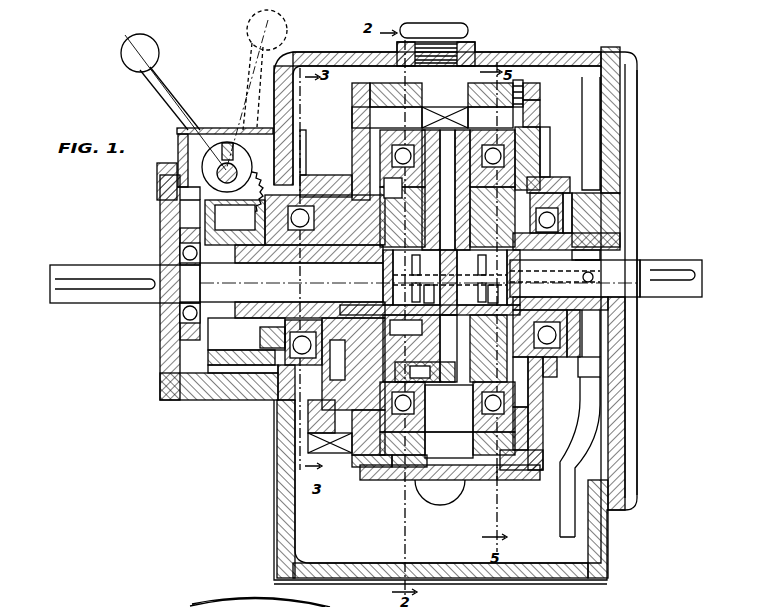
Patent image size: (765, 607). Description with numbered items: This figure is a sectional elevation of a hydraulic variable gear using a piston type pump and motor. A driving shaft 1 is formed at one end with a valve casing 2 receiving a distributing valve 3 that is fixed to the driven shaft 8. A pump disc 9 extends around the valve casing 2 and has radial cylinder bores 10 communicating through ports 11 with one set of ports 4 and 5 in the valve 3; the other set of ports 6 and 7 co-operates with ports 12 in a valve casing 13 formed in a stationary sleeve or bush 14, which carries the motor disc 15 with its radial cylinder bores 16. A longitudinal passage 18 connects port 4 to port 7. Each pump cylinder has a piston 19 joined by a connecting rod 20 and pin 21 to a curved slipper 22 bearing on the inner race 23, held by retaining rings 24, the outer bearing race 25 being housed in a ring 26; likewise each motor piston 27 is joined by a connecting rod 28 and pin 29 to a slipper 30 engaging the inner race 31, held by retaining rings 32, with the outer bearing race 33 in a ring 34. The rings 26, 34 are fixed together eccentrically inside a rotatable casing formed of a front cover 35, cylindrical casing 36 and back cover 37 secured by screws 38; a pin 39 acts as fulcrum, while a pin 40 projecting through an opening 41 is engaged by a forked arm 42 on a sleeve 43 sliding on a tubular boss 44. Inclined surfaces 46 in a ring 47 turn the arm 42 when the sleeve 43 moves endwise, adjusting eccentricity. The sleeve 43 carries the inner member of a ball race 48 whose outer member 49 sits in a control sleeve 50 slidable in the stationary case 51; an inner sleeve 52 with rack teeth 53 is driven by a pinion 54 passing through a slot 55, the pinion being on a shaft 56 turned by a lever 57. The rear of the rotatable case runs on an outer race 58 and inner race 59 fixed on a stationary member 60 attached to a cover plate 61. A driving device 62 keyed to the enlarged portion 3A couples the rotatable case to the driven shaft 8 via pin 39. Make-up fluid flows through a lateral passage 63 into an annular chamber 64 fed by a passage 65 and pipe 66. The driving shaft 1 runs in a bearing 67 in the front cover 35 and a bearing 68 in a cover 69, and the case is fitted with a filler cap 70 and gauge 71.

The driving shaft 1 is at (125, 284).
The valve casing 2 is at (345, 175).
The distributing valve 3 is at (462, 294).
The portion of enlarged diameter 3A is at (468, 222).
The port 4 is at (421, 265).
The port 5 is at (408, 293).
The port 6 is at (488, 265).
The port 7 is at (475, 293).
The driven shaft 8 is at (672, 263).
The pump disc 9 is at (402, 188).
The radial cylinder bores 10 is at (411, 348).
The ports 11 is at (385, 298).
The ports 12 is at (590, 252).
The valve casing 13 is at (540, 372).
The stationary sleeve or bush 14 is at (610, 235).
The motor disc 15 is at (478, 368).
The radial cylinder bores 16 is at (572, 230).
The longitudinal passage 18 is at (575, 278).
The piston 19 is at (300, 367).
The connecting rod 20 is at (310, 420).
The pin 21 is at (430, 370).
The curved slipper 22 is at (426, 407).
The inner race 23 is at (476, 407).
The retaining rings 24 is at (380, 160).
The outer bearing race 25 is at (380, 468).
The ring 26 is at (400, 470).
The piston 27 is at (548, 180).
The connecting rod 28 is at (530, 160).
The pin 29 is at (546, 150).
The curved slipper 30 is at (535, 120).
The inner race 31 is at (525, 440).
The retaining rings 32 is at (525, 395).
The outer bearing race 33 is at (525, 472).
The ring 34 is at (505, 482).
The front cover 35 is at (355, 95).
The rotatable casing 36 is at (516, 80).
The back cover 37 is at (540, 88).
The screws 38 is at (238, 599).
The pin 39 is at (432, 105).
The pin 40 is at (447, 445).
The opening 41 is at (360, 458).
The arm 42 is at (305, 432).
The sleeve 43 is at (262, 327).
The tubular boss 44 is at (420, 281).
The inclined surfaces 46 is at (285, 395).
The ring 47 is at (303, 160).
The inner member of ball race 48 is at (262, 340).
The outer member of ball race 49 is at (240, 373).
The control sleeve 50 is at (190, 380).
The stationary case 51 is at (545, 52).
The inner sleeve 52 is at (215, 357).
The rack teeth 53 is at (228, 205).
The pinion 54 is at (200, 185).
The slot 55 is at (275, 222).
The shaft 56 is at (217, 172).
The lever 57 is at (175, 90).
The outer race 58 is at (560, 350).
The inner race 59 is at (625, 310).
The stationary member 60 is at (610, 245).
The cover plate 61 is at (612, 150).
The driving device 62 is at (470, 60).
The lateral passage 63 is at (592, 280).
The annular space or chamber 64 is at (585, 260).
The passage 65 is at (590, 336).
The pipe 66 is at (590, 410).
The bearing 67 is at (370, 252).
The bearing 68 is at (200, 253).
The cover 69 is at (165, 212).
The filler cap 70 is at (468, 30).
The gauge 71 is at (440, 490).